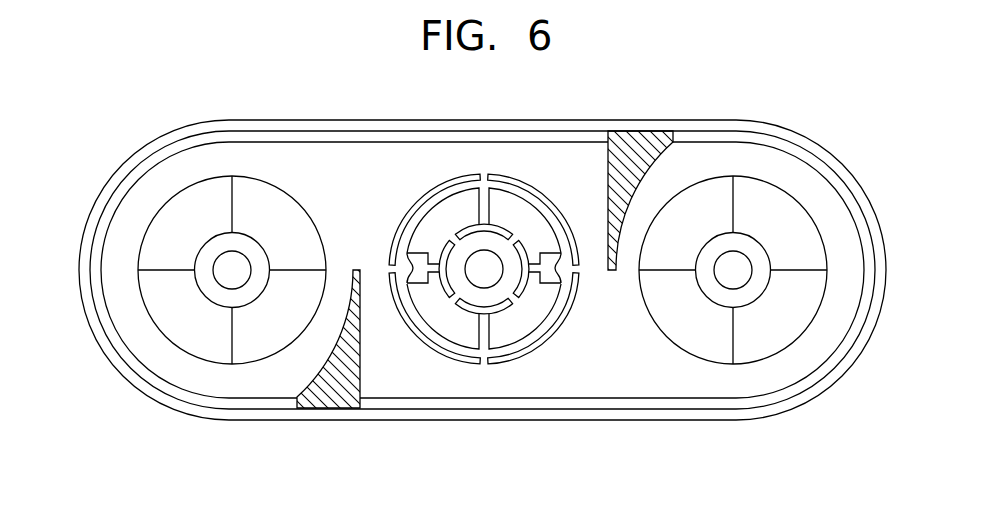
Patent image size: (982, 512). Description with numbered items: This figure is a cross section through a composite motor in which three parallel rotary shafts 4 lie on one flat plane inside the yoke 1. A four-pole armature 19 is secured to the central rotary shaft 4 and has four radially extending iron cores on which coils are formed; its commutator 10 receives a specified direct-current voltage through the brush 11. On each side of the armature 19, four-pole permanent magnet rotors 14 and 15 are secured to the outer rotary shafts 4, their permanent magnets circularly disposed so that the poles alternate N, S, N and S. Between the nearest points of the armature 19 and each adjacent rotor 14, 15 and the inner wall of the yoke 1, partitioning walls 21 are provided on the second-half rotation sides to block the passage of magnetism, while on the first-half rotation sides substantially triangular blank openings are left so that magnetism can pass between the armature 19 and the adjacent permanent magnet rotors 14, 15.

The yoke 1 is at (128, 158).
The rotary shaft 4 is at (240, 262).
The commutator 10 is at (503, 312).
The brush 11 is at (431, 262).
The permanent magnet rotor 14 is at (155, 300).
The permanent magnet rotor 15 is at (807, 210).
The armature 19 is at (511, 178).
The partitioning wall 21 is at (633, 135).